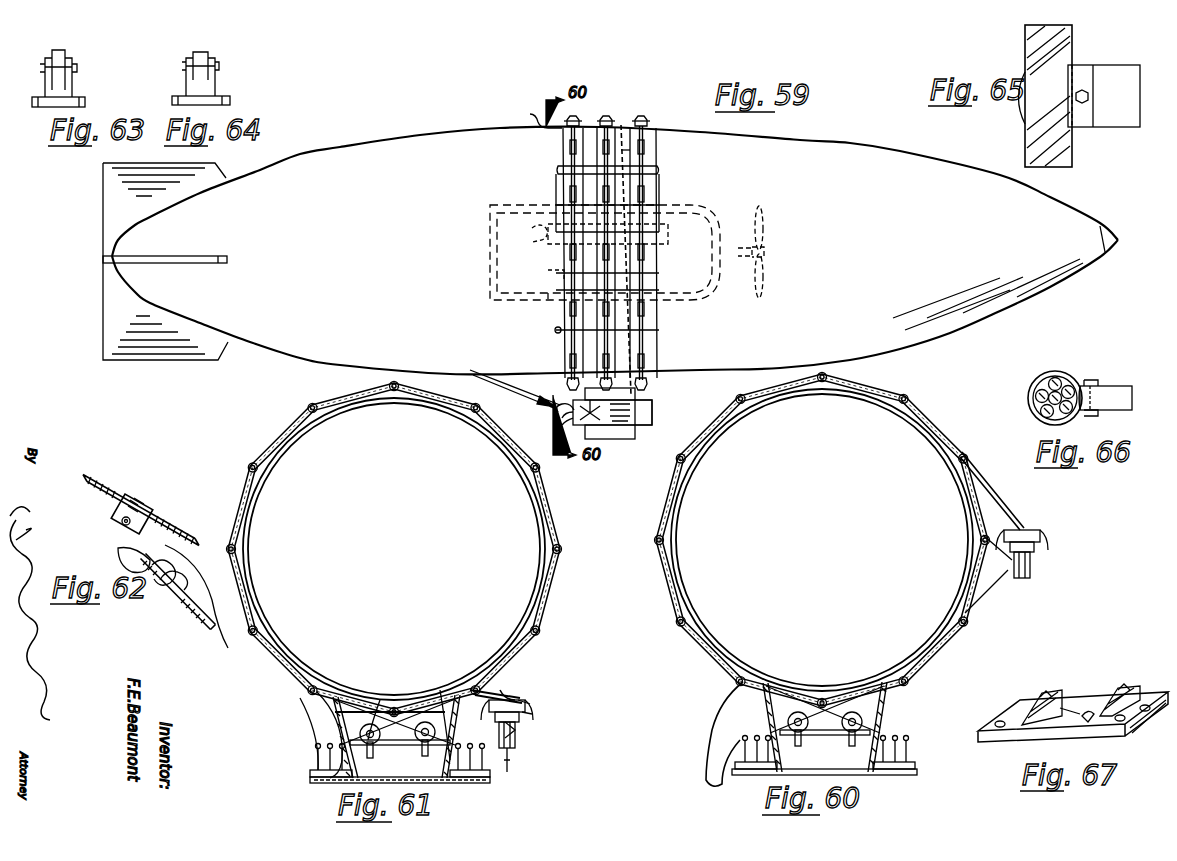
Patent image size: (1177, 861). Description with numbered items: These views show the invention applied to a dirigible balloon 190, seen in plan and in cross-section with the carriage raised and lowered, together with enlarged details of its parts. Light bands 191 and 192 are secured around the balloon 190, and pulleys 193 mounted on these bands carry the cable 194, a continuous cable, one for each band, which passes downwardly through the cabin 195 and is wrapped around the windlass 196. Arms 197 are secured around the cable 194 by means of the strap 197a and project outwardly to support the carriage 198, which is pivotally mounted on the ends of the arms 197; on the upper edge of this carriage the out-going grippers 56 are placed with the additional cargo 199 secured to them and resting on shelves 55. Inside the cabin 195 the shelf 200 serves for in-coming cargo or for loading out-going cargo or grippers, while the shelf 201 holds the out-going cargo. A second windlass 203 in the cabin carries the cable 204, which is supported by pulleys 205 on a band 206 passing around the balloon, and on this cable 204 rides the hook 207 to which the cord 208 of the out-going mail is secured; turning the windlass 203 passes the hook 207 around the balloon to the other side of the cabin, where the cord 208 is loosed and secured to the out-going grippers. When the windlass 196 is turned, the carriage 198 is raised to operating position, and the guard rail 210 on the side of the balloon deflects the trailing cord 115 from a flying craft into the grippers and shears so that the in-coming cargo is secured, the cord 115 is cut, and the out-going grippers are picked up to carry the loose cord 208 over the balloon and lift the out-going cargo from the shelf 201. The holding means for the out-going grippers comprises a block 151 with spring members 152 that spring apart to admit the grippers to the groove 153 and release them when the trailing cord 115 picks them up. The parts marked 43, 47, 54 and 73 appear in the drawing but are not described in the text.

In FIG. 59, the spring 43 is at (573, 428).
In FIG. 59, the crossed cable link 47 is at (594, 396).
In FIG. 59, the upper clamp plate 54 is at (610, 397).
In FIG. 59, the shelves 55 is at (610, 433).
In FIG. 61, the shelves 55 is at (532, 714).
In FIG. 59, the out-going grippers 56 is at (645, 425).
In FIG. 61, the out-going grippers 56 is at (525, 700).
In FIG. 60, the out-going grippers 56 is at (1034, 524).
In FIG. 59, the cable eye 73 is at (561, 395).
In FIG. 61, the trailing cord 115 is at (512, 766).
In FIG. 67, the block 151 is at (1140, 736).
In FIG. 67, the spring members 152 is at (1032, 700).
In FIG. 67, the groove 153 is at (1078, 700).
In FIG. 59, the balloon 190 is at (610, 251).
In FIG. 61, the balloon 190 is at (540, 516).
In FIG. 60, the balloon 190 is at (682, 488).
In FIG. 59, the band 191 is at (646, 134).
In FIG. 59, the band 192 is at (530, 114).
In FIG. 61, the band 192 is at (548, 514).
In FIG. 60, the band 192 is at (733, 402).
In FIG. 63, the band 192 is at (85, 102).
In FIG. 66, the band 192 is at (1030, 404).
In FIG. 59, the pulleys 193 is at (574, 116).
In FIG. 61, the pulleys 193 is at (250, 470).
In FIG. 60, the pulleys 193 is at (897, 394).
In FIG. 63, the pulleys 193 is at (65, 52).
In FIG. 59, the cable 194 is at (558, 170).
In FIG. 61, the cable 194 is at (253, 465).
In FIG. 65, the cable 194 is at (1025, 48).
In FIG. 61, the cabin 195 is at (445, 782).
In FIG. 60, the cabin 195 is at (886, 700).
In FIG. 59, the windlass 196 is at (535, 295).
In FIG. 61, the windlass 196 is at (428, 752).
In FIG. 60, the windlass 196 is at (854, 738).
In FIG. 61, the arms 197 is at (492, 690).
In FIG. 65, the arms 197 is at (1136, 54).
In FIG. 66, the arms 197 is at (1112, 384).
In FIG. 66, the strap 197a is at (1058, 376).
In FIG. 61, the carriage 198 is at (520, 728).
In FIG. 61, the additional cargo 199 is at (530, 704).
In FIG. 61, the shelf 200 is at (488, 782).
In FIG. 61, the shelf 201 is at (328, 786).
In FIG. 59, the windlass 203 is at (532, 242).
In FIG. 61, the windlass 203 is at (378, 752).
In FIG. 60, the windlass 203 is at (802, 738).
In FIG. 61, the cable 204 is at (430, 712).
In FIG. 62, the cable 204 is at (122, 492).
In FIG. 59, the pulleys 205 is at (604, 118).
In FIG. 64, the pulleys 205 is at (208, 55).
In FIG. 59, the band 206 is at (621, 125).
In FIG. 64, the band 206 is at (230, 100).
In FIG. 61, the hook 207 is at (213, 607).
In FIG. 59, the cord 208 is at (630, 150).
In FIG. 61, the cord 208 is at (322, 736).
In FIG. 60, the cord 208 is at (712, 728).
In FIG. 62, the cord 208 is at (194, 620).
In FIG. 59, the guard rail 210 is at (496, 378).